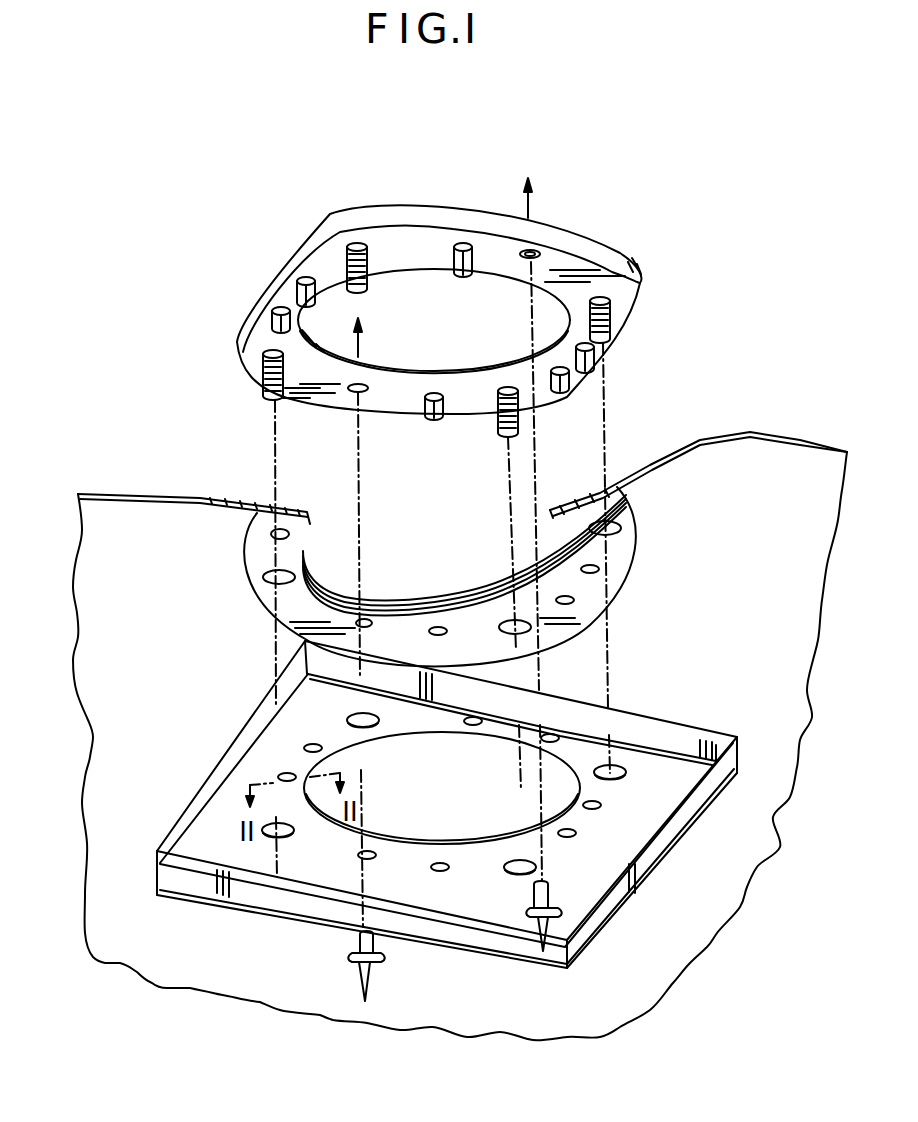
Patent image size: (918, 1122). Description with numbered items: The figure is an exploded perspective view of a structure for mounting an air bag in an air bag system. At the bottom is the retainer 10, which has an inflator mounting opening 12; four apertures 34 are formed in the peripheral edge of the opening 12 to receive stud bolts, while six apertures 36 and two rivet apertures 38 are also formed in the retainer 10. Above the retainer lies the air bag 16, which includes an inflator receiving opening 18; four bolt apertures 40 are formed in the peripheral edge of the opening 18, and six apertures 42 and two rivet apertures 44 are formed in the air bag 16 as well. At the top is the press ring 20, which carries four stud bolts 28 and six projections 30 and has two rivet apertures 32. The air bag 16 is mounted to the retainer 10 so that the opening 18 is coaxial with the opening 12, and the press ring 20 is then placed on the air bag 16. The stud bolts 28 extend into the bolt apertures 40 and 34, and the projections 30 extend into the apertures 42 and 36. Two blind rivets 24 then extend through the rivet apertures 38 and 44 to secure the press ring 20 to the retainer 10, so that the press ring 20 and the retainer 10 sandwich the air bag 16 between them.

The retainer 10 is at (207, 860).
The inflator mounting opening 12 is at (580, 775).
The air bag 16 is at (753, 443).
The inflator receiving opening 18 is at (457, 597).
The press ring 20 is at (607, 243).
The blind rivets 24 is at (550, 918).
The stud bolts 28 is at (348, 257).
The projections 30 is at (457, 243).
The rivet apertures 32 is at (538, 252).
The apertures 34 is at (347, 720).
The apertures 36 is at (303, 748).
The rivet apertures 38 is at (550, 735).
The bolt apertures 40 is at (267, 578).
The apertures 42 is at (275, 530).
The rivet apertures 44 is at (357, 621).